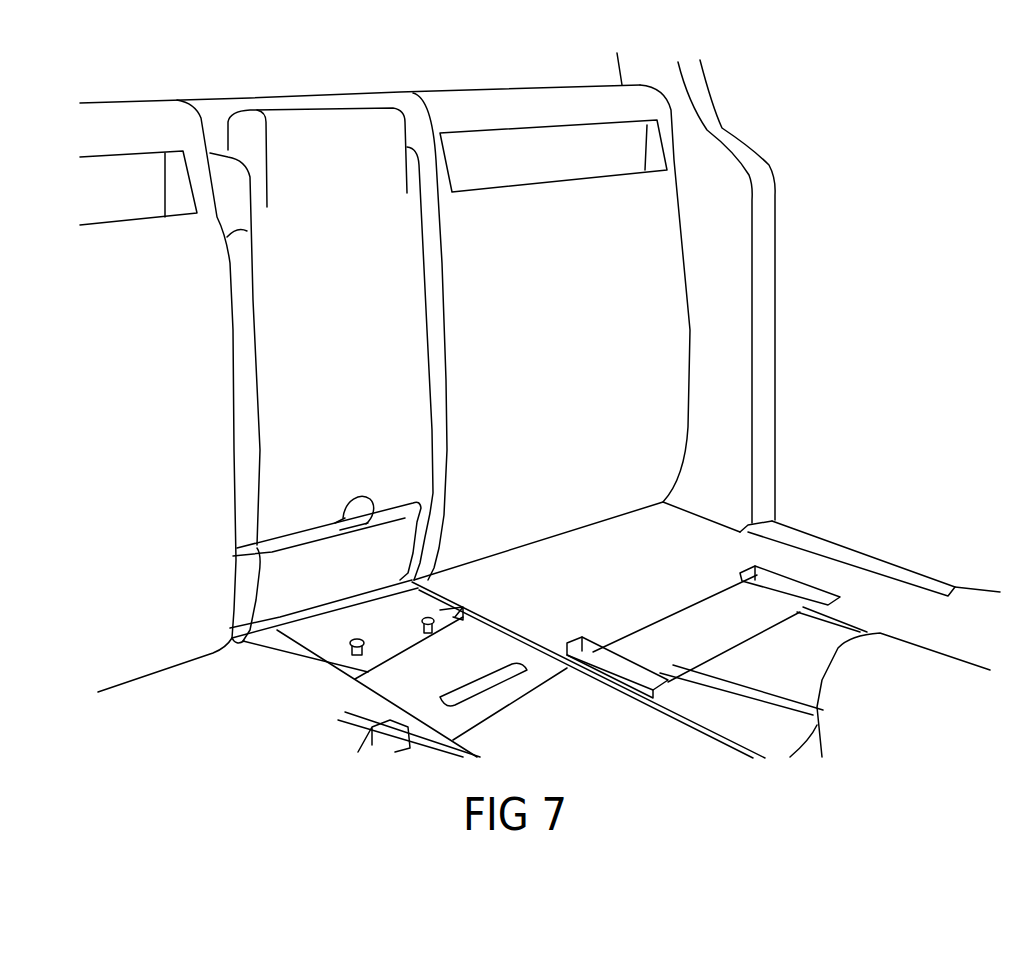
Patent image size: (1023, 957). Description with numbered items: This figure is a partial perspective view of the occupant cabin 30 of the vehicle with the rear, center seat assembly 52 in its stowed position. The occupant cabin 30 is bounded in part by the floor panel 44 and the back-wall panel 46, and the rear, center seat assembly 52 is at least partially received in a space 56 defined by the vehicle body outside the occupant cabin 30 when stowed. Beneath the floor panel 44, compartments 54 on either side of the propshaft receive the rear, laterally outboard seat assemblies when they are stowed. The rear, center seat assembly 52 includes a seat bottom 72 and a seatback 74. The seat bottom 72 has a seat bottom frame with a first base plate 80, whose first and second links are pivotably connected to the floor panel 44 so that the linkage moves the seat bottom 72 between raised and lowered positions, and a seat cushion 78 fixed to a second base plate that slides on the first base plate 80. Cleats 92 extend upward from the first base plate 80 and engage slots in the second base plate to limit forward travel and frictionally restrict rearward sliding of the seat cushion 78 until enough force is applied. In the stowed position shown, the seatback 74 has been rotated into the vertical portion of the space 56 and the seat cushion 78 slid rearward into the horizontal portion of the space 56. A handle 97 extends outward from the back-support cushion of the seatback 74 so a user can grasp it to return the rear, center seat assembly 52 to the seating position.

The occupant cabin 30 is at (667, 57).
The floor panel 44 is at (715, 533).
The back-wall panel 46 is at (608, 193).
The rear, center seat assembly 52 is at (332, 117).
The compartments 54 is at (833, 630).
The space 56 is at (247, 231).
The seat bottom 72 is at (273, 622).
The seatback 74 is at (424, 311).
The seat cushion 78 is at (242, 622).
The first base plate 80 is at (403, 617).
The cleats 92 is at (370, 647).
The handle 97 is at (340, 513).